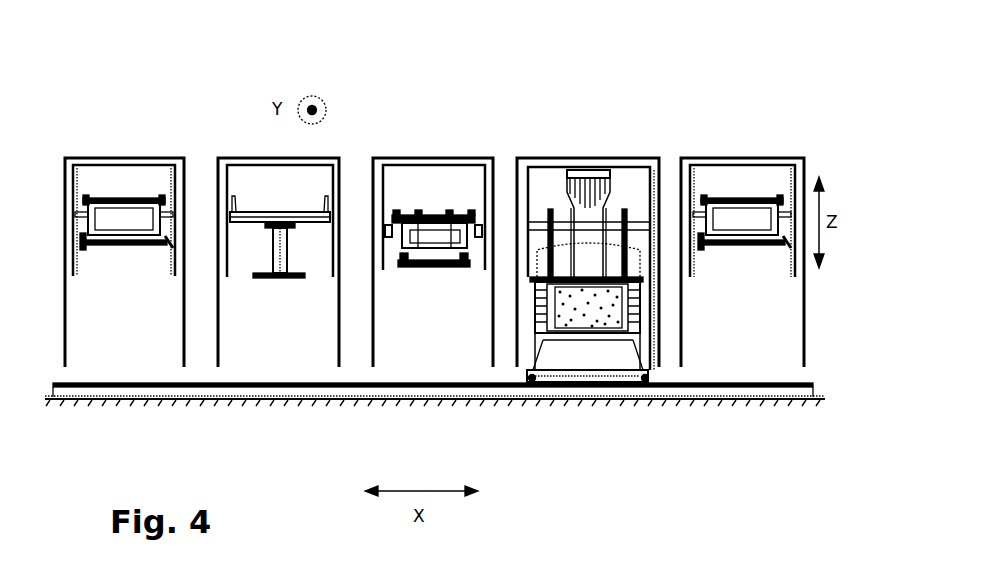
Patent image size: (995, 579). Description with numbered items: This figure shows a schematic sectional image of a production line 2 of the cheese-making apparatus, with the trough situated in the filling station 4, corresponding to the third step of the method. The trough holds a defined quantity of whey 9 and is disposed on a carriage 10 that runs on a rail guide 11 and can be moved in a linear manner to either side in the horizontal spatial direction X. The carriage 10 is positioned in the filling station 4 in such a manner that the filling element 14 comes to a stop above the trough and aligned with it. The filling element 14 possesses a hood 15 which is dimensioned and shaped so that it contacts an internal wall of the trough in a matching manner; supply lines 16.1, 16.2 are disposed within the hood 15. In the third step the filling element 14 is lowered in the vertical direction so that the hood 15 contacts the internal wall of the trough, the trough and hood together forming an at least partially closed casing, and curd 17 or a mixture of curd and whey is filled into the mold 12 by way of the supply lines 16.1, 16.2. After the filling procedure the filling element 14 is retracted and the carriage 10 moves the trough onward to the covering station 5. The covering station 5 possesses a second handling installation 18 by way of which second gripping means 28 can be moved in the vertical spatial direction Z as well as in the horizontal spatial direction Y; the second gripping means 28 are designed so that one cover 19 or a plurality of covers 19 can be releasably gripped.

The production line 2 is at (151, 90).
The filling station 4 is at (600, 266).
The covering station 5 is at (450, 267).
The whey 9 is at (533, 372).
The carriage 10 is at (590, 337).
The rail guide 11 is at (265, 400).
The mold 12 is at (617, 340).
The filling element 14 is at (556, 170).
The hood 15 is at (645, 274).
The supply line 16.1 is at (551, 210).
The supply line 16.2 is at (625, 210).
The curd 17 is at (561, 358).
The second handling installation 18 is at (415, 213).
The cover 19 is at (420, 272).
The second gripping means 28 is at (462, 268).